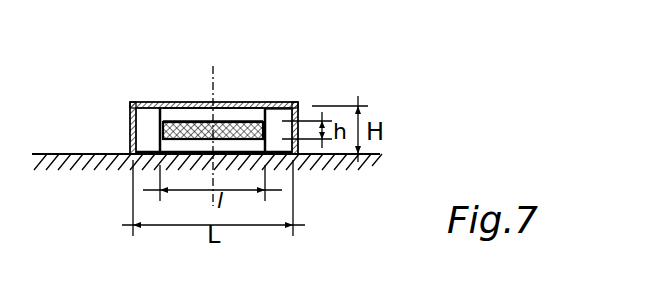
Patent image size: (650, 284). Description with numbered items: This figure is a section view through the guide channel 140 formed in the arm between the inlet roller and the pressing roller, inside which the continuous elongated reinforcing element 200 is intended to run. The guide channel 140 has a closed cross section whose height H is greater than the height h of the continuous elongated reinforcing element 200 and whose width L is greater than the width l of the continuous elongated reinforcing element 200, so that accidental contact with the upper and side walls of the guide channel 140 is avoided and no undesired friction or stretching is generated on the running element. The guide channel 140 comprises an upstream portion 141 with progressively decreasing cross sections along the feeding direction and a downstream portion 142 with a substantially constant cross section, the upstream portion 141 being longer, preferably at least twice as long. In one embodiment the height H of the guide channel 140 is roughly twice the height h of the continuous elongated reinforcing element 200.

The guide channel 140 is at (118, 103).
The upstream portion 141 is at (281, 143).
The downstream portion 142 is at (264, 103).
The continuous elongated reinforcing element 200 is at (184, 122).